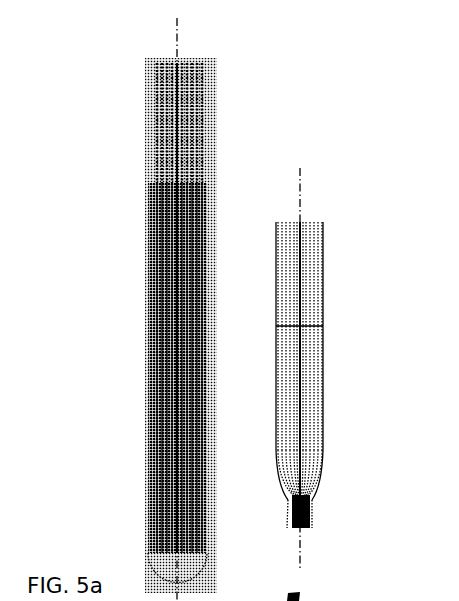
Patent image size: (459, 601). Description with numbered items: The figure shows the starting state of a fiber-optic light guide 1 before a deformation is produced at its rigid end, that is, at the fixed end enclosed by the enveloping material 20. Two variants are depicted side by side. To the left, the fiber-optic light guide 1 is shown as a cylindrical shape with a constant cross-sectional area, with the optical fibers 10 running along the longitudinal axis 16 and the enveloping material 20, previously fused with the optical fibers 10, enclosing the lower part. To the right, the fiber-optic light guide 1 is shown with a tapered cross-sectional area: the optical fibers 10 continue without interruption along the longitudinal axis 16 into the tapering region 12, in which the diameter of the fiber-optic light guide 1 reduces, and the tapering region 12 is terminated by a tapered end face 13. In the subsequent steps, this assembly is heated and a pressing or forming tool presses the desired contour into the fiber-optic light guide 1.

The fiber-optic light guide 1 is at (172, 122).
The optical fibers 10 is at (170, 148).
The tapering region 12 is at (318, 478).
The tapered end face 13 is at (300, 529).
The longitudinal axis 16 is at (177, 42).
The enveloping material 20 is at (152, 437).